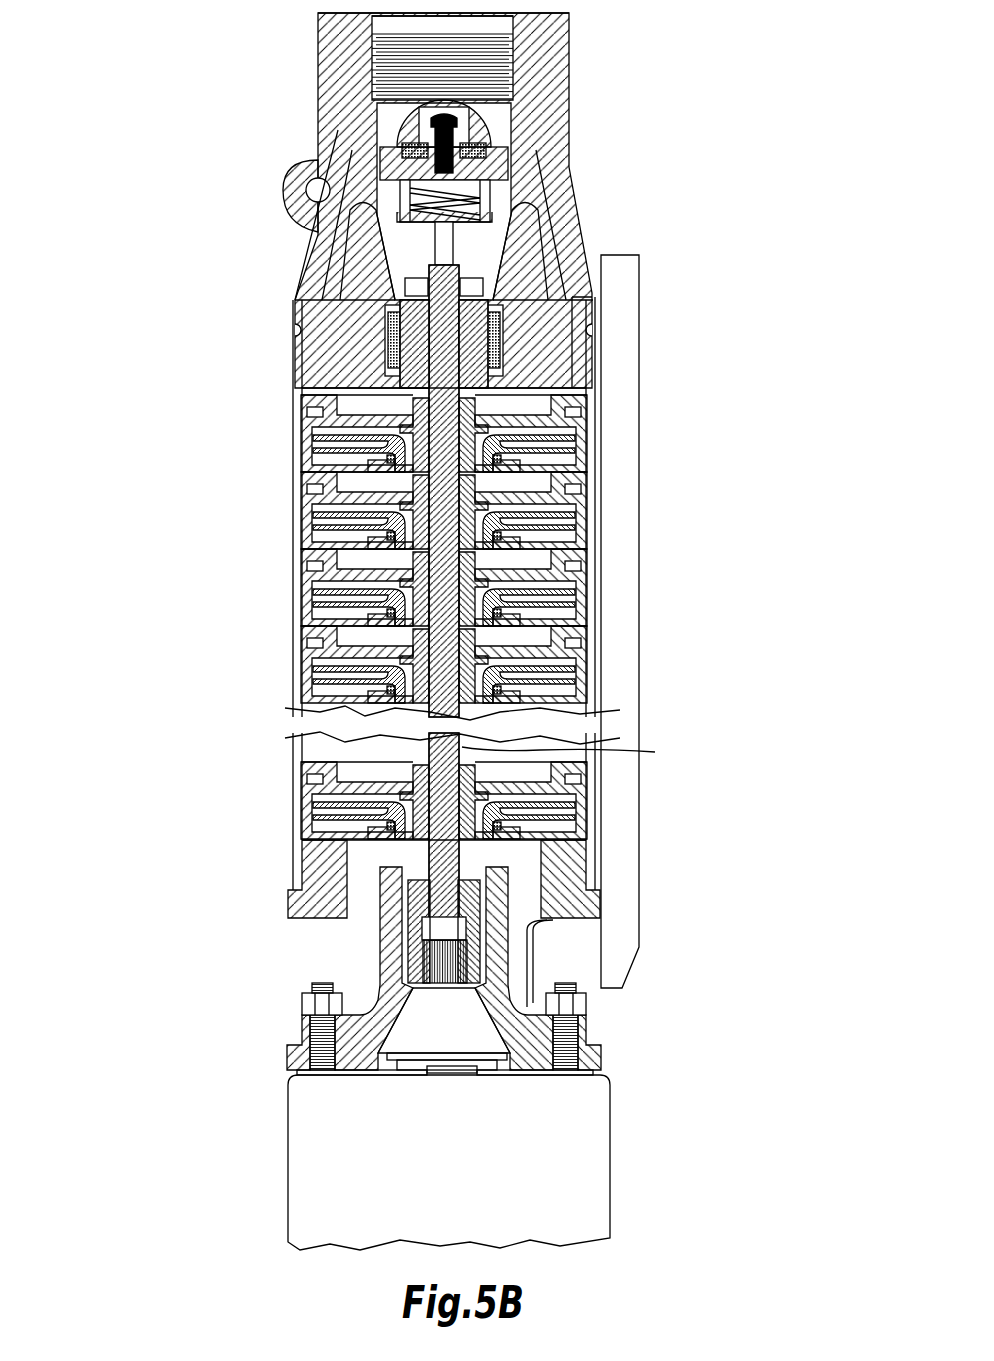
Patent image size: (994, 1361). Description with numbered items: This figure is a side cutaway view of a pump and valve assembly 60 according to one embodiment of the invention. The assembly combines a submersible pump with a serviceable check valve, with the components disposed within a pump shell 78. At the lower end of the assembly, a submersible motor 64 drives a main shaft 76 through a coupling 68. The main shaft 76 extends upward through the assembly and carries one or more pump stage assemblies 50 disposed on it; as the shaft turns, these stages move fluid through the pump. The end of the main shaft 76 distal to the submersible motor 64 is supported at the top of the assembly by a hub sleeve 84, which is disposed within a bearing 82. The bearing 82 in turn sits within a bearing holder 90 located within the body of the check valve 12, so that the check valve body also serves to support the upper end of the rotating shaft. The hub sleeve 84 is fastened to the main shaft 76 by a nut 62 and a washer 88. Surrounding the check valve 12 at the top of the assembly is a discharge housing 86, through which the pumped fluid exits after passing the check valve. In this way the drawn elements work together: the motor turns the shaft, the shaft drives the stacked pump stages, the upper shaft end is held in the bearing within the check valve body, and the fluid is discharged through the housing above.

The pump and valve assembly 60 is at (404, 631).
The valve body 12 is at (547, 177).
The discharge housing 86 is at (570, 63).
The hub sleeve 84 is at (490, 300).
The nut 62 is at (427, 273).
The washer 88 is at (405, 288).
The bearing holder 90 is at (390, 340).
The bearing 82 is at (492, 348).
The pump stage assemblies 50 is at (292, 655).
The main shaft 76 is at (580, 754).
The pump shell 78 is at (600, 385).
The coupling 68 is at (490, 915).
The submersible motor 64 is at (480, 1075).